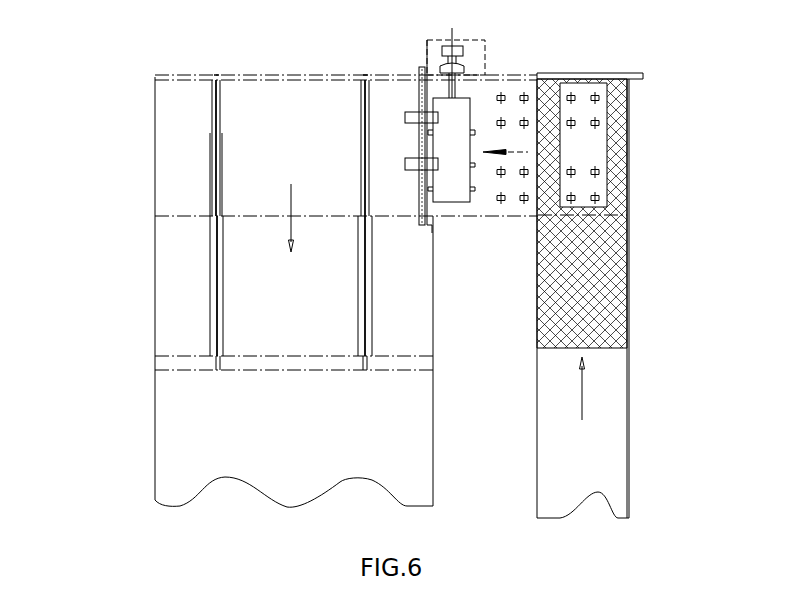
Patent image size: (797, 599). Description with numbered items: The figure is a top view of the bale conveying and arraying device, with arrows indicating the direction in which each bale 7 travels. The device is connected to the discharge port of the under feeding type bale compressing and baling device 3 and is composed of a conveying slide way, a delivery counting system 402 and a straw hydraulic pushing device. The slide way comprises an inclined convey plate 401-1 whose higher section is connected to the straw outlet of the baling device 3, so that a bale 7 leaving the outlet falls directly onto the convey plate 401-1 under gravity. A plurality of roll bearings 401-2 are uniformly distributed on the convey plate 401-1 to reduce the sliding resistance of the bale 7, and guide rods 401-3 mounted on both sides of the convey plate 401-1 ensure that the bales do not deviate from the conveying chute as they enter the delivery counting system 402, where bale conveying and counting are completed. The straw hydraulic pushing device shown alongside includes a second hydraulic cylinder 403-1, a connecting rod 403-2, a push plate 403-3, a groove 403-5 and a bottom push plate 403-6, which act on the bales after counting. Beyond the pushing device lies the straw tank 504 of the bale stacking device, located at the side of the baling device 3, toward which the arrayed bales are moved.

The under feeding type bale compressing and baling device 3 is at (600, 423).
The bale 7 is at (540, 80).
The convey plate 401-1 is at (625, 180).
The roll bearing 401-2 is at (600, 98).
The guide rods 401-3 is at (607, 74).
The delivery counting system 402 is at (418, 87).
The second hydraulic cylinder 403-1 is at (210, 247).
The connecting rod 403-2 is at (217, 76).
The push plate 403-3 is at (155, 77).
The groove 403-5 is at (212, 133).
The bottom push plate 403-6 is at (193, 178).
The straw tank 504 is at (200, 427).